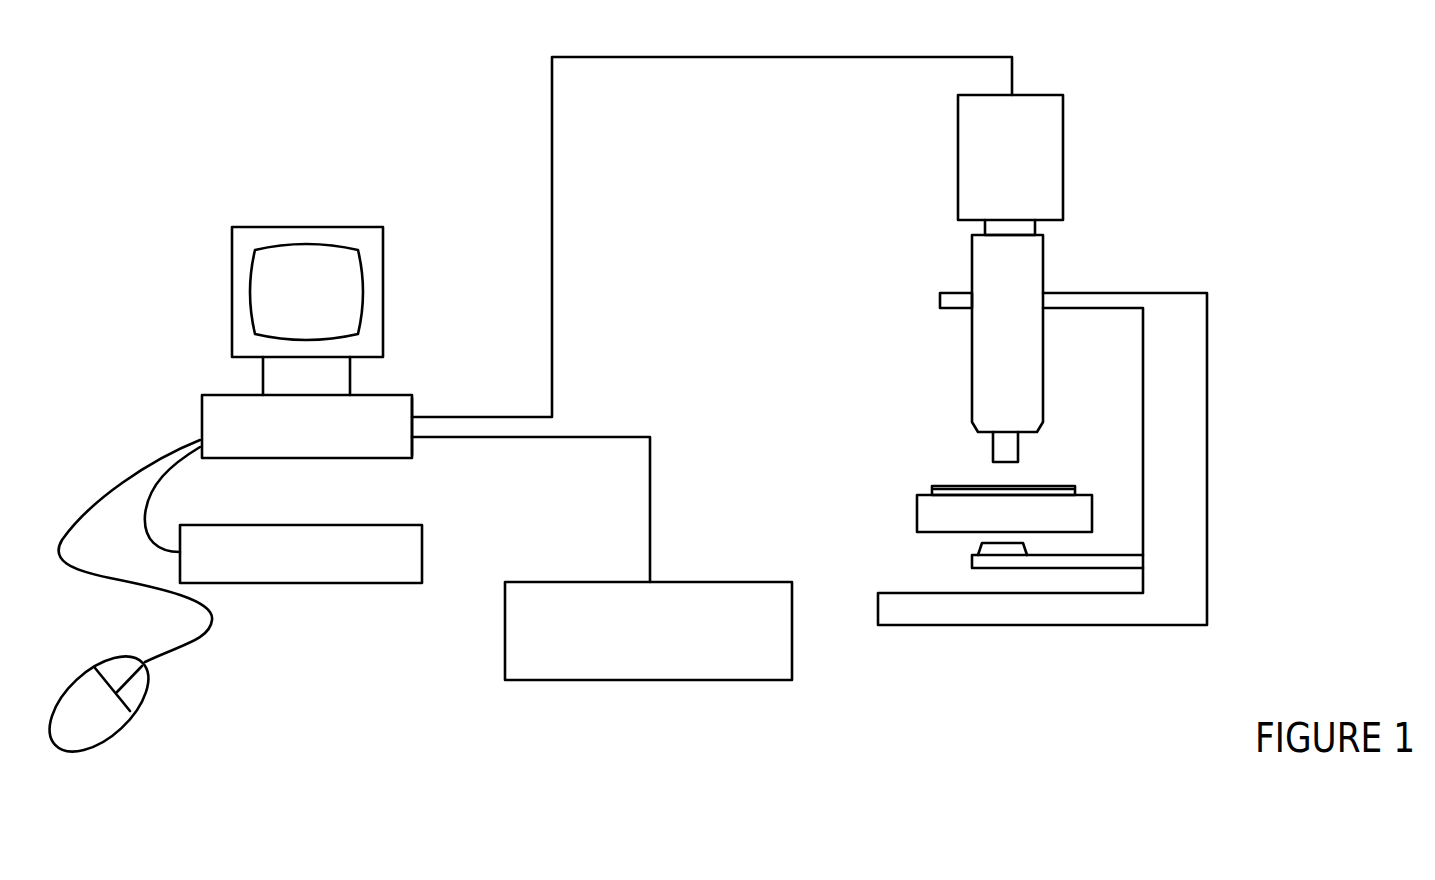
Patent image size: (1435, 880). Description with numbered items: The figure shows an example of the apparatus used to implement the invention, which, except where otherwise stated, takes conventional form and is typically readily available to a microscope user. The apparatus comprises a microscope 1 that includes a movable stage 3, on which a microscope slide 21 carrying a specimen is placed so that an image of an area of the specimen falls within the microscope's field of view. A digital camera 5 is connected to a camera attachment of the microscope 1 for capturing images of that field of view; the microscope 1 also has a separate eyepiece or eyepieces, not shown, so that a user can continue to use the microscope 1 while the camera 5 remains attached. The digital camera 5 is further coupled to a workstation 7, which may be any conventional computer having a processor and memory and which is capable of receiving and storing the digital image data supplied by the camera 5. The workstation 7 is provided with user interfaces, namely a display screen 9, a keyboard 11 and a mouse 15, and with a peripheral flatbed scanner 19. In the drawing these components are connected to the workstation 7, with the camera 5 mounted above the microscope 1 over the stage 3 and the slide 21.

The microscope 1 is at (1135, 251).
The movable stage 3 is at (932, 520).
The digital camera 5 is at (1053, 117).
The workstation 7 is at (223, 425).
The display screen 9 is at (366, 253).
The keyboard 11 is at (342, 583).
The mouse 15 is at (98, 728).
The flatbed scanner 19 is at (737, 668).
The microscope slide 21 is at (937, 486).